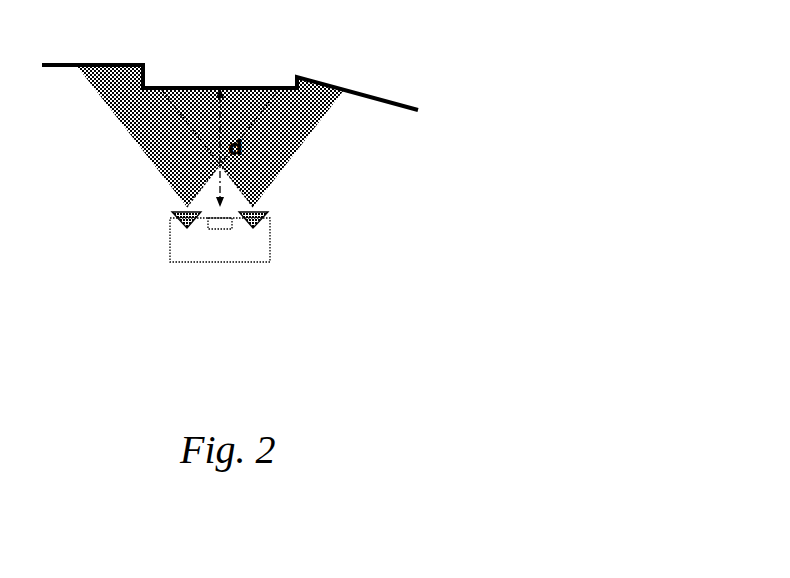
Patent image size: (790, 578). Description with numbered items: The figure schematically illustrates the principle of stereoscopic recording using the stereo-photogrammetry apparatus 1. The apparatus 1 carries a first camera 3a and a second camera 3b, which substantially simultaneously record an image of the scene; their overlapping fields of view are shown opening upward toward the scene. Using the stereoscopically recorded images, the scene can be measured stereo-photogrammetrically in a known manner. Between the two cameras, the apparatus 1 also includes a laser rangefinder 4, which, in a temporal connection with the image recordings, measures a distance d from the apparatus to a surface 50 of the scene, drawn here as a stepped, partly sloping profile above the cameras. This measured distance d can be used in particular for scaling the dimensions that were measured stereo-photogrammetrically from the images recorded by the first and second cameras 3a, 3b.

The surface 50 is at (253, 86).
The apparatus 1 is at (183, 271).
The first camera 3a is at (150, 211).
The second camera 3b is at (307, 232).
The laser rangefinder 4 is at (272, 266).